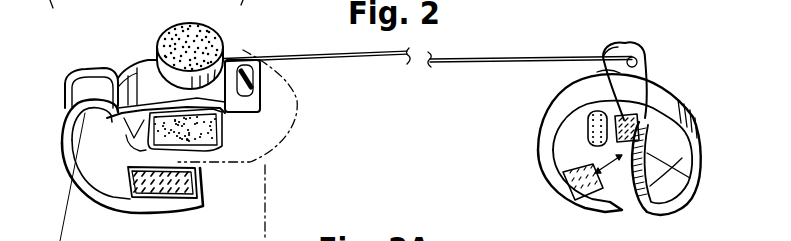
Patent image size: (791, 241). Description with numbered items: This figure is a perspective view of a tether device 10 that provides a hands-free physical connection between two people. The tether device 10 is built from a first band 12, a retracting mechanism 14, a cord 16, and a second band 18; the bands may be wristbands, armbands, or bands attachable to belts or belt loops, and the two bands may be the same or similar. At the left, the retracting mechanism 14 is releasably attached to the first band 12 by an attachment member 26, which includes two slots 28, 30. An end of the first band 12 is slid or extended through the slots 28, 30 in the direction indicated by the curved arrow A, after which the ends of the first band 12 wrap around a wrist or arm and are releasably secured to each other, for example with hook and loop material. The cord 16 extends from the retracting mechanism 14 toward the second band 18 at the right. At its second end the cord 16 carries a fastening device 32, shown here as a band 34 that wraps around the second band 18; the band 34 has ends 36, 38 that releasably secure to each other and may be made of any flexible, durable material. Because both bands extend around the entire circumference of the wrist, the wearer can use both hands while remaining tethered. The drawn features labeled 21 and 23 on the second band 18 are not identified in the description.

The tether device 10 is at (473, 36).
The first band 12 is at (62, 115).
The retracting mechanism 14 is at (224, 32).
The cord 16 is at (455, 67).
The second band 18 is at (703, 123).
The inner liner 21 is at (690, 178).
The gripping pad 23 is at (602, 192).
The attachment member 26 is at (148, 50).
The slot 28 is at (112, 67).
The slot 30 is at (255, 72).
The fastening device 32 is at (662, 52).
The band 34 is at (668, 88).
The end 36 is at (597, 147).
The end 38 is at (617, 138).
The curved arrow A is at (285, 135).